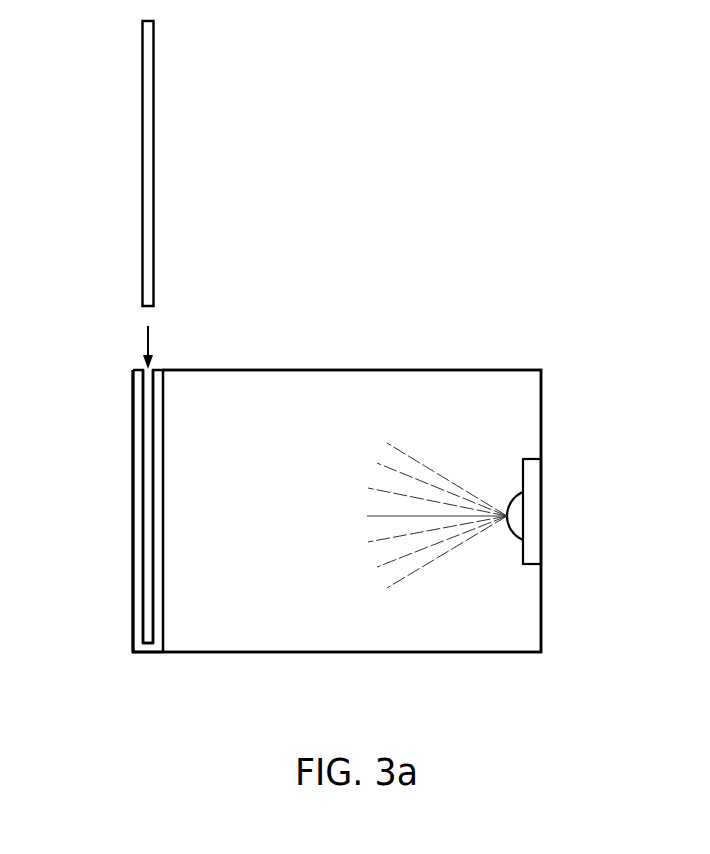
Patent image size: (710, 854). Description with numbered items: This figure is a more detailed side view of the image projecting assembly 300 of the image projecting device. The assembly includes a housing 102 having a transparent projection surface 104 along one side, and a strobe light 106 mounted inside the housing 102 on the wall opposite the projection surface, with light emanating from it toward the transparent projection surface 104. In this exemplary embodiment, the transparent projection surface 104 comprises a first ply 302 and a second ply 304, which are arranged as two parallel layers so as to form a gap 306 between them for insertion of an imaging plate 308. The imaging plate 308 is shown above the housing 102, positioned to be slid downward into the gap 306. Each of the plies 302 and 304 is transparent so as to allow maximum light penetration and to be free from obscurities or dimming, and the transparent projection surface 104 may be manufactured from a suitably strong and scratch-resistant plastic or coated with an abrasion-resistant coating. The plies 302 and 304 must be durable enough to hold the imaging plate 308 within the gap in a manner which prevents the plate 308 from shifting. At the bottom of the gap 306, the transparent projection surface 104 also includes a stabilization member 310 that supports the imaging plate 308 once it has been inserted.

The image projecting assembly 300 is at (546, 329).
The housing 102 is at (403, 370).
The transparent projection surface 104 is at (133, 645).
The strobe light 106 is at (517, 490).
The first ply 302 is at (133, 400).
The second ply 304 is at (153, 461).
The gap 306 is at (147, 531).
The imaging plate 308 is at (150, 155).
The stabilization member 310 is at (148, 653).